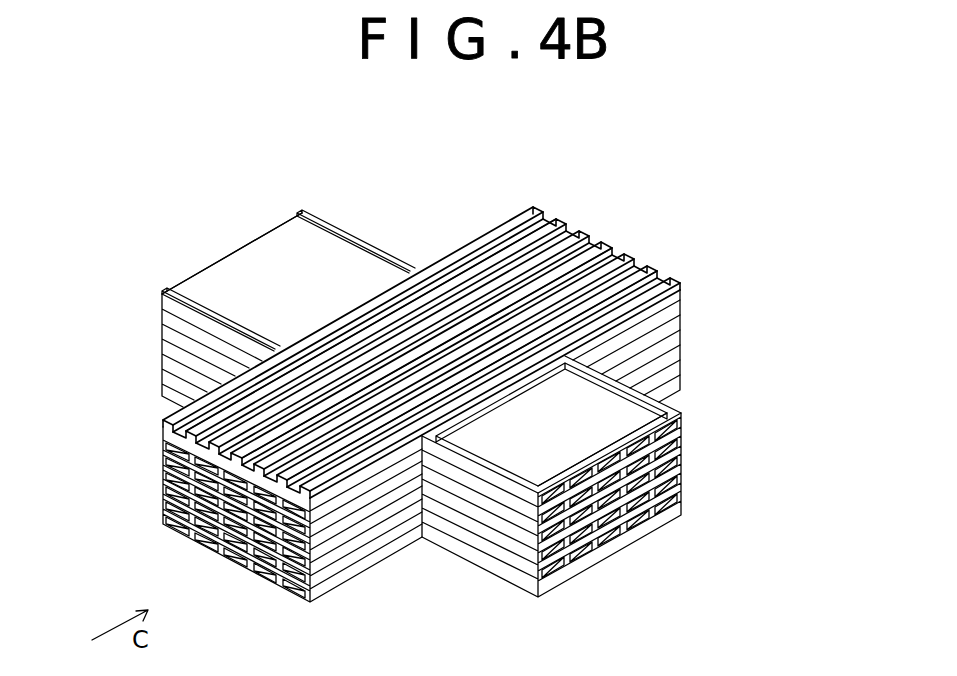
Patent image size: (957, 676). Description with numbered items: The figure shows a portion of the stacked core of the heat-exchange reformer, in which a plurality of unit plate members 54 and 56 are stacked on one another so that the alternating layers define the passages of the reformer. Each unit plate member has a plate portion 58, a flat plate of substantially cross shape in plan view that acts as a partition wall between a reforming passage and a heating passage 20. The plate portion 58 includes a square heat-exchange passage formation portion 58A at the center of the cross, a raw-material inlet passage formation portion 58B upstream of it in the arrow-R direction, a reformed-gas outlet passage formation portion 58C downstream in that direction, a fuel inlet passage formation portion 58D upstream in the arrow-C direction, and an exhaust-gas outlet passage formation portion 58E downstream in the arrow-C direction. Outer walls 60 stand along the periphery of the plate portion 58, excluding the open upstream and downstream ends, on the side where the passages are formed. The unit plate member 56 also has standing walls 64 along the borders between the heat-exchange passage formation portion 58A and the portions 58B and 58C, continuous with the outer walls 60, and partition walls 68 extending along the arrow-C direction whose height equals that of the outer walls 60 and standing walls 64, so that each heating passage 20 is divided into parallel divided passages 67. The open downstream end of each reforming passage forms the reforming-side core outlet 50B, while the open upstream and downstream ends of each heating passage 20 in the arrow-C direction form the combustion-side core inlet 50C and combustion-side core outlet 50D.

The plate portion 58 is at (592, 160).
The heat-exchange passage formation portion 58A is at (448, 347).
The raw-material inlet passage formation portion 58B is at (313, 257).
The reformed-gas outlet passage formation portion 58C is at (571, 420).
The fuel inlet passage formation portion 58D is at (318, 410).
The exhaust-gas outlet passage formation portion 58E is at (492, 253).
The outer walls 60 is at (305, 216).
The partition walls 68 is at (312, 420).
The standing walls 64 is at (473, 413).
The reforming-side core outlet 50B is at (652, 515).
The combustion-side core inlet 50C is at (245, 480).
The combustion-side core outlet 50D is at (592, 236).
The unit plate member 54 is at (694, 302).
The unit plate member 56 is at (696, 274).
The divided passages 67 is at (410, 354).
The heating passage 20 is at (539, 532).